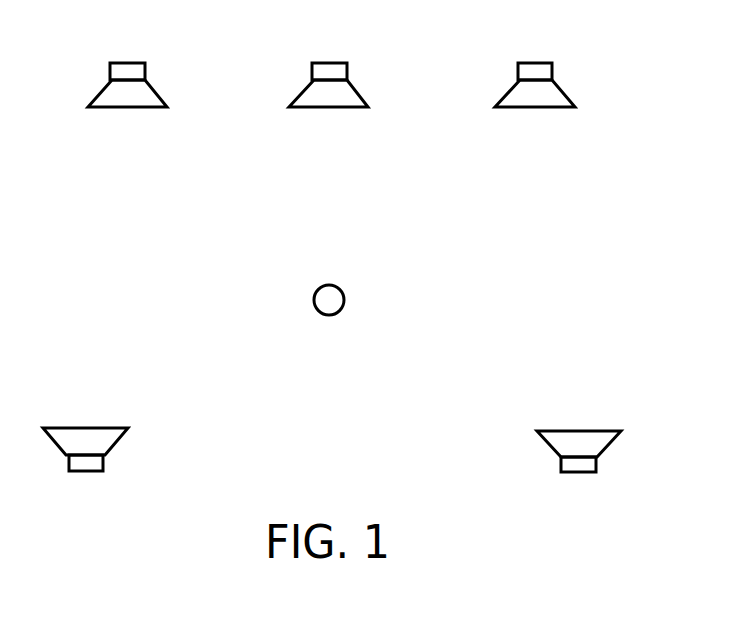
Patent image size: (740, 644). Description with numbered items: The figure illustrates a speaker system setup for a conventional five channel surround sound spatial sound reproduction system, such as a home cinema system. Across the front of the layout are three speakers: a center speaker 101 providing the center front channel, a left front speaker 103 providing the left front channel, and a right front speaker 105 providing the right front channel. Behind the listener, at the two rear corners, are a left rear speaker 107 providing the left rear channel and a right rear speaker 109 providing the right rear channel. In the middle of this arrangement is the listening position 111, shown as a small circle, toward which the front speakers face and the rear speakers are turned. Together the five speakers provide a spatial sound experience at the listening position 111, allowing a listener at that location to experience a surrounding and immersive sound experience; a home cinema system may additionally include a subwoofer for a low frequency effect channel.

The center speaker 101 is at (348, 72).
The left front speaker 103 is at (146, 72).
The right front speaker 105 is at (553, 72).
The left rear speaker 107 is at (104, 463).
The right rear speaker 109 is at (560, 466).
The listening position 111 is at (346, 300).